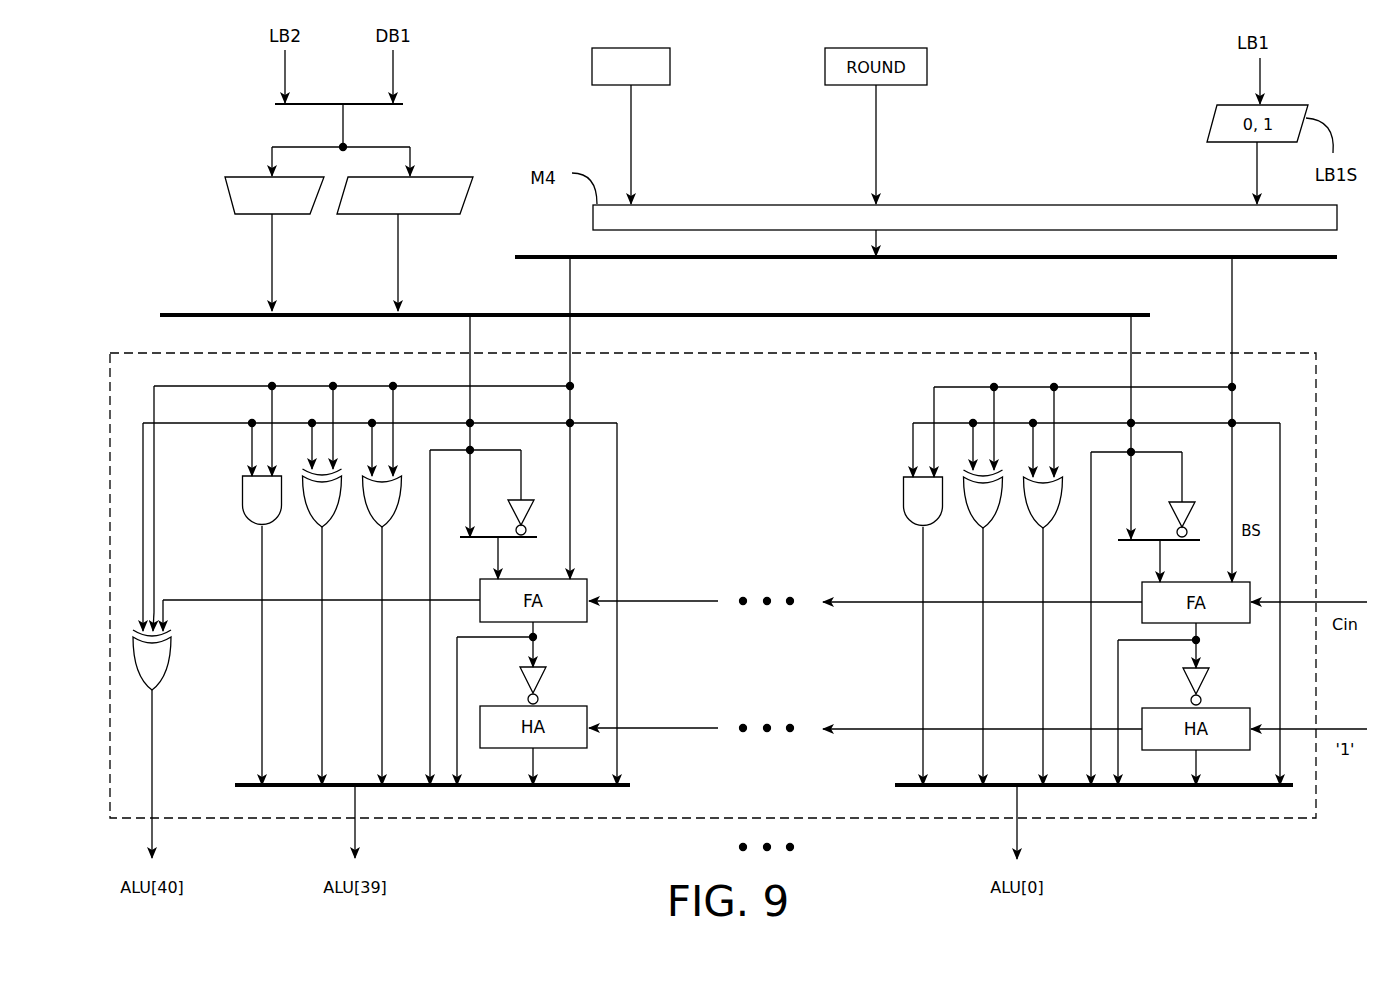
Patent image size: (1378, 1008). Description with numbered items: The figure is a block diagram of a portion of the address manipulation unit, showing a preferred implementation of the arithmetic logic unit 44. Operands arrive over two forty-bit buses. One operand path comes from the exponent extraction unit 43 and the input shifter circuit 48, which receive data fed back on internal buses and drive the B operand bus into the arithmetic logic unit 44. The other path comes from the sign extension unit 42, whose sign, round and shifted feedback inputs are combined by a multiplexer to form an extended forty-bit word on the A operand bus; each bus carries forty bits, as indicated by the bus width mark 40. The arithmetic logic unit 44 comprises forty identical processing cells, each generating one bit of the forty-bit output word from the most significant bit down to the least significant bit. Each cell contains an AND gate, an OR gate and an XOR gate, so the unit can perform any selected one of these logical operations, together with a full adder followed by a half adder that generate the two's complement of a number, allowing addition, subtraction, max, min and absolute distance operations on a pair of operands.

The 40-bit operand bus 40 is at (1175, 248).
The sign extension unit 42 is at (592, 62).
The exponent extraction unit 43 is at (237, 176).
The arithmetic logic unit 44 is at (1245, 820).
The input shifter circuit 48 is at (455, 176).